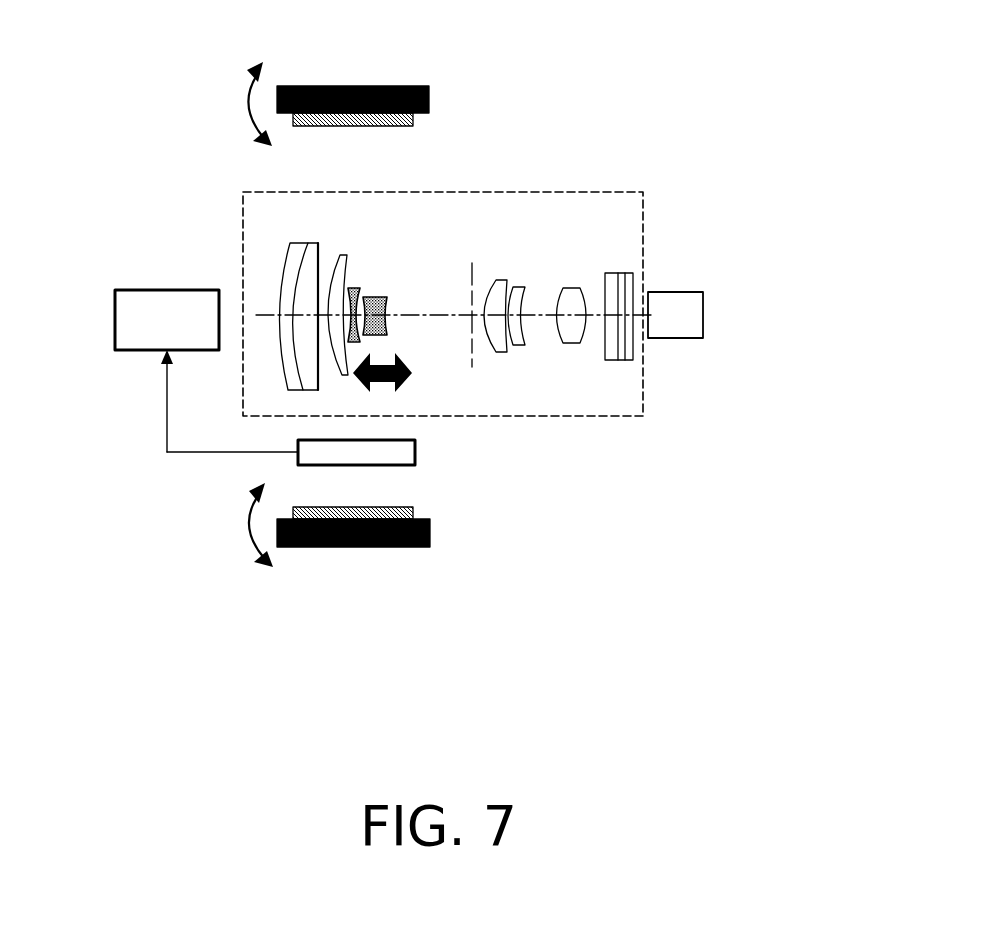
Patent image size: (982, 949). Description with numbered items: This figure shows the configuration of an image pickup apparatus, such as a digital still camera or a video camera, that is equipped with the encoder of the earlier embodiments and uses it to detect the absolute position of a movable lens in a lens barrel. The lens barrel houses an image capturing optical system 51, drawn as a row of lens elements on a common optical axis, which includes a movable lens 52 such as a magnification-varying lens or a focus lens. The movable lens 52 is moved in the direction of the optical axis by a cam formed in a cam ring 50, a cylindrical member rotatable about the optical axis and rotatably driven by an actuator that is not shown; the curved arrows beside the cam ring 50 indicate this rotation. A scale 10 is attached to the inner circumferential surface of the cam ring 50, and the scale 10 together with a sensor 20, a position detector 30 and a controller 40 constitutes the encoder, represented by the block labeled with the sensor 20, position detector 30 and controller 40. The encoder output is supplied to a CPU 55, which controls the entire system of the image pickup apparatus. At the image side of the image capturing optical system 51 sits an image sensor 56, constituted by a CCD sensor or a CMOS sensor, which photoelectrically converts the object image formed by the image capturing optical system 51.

The scale 10 is at (413, 118).
The sensor 20 is at (440, 464).
The position detector 30 is at (440, 464).
The controller 40 is at (415, 453).
The cam ring 50 is at (392, 86).
The image capturing optical system 51 is at (263, 242).
The movable lens 52 is at (383, 298).
The CPU 55 is at (140, 330).
The image sensor 56 is at (687, 323).